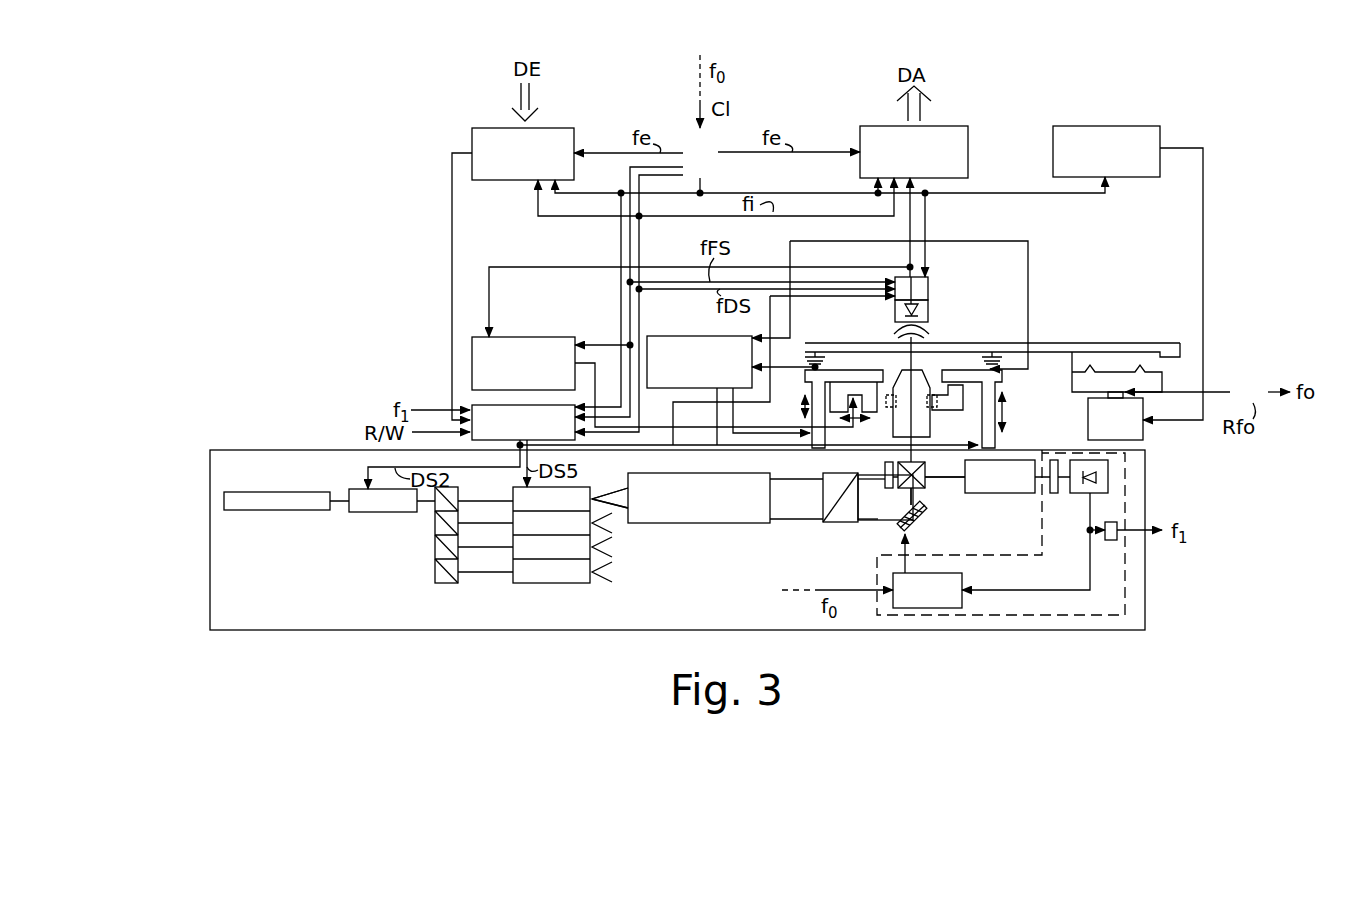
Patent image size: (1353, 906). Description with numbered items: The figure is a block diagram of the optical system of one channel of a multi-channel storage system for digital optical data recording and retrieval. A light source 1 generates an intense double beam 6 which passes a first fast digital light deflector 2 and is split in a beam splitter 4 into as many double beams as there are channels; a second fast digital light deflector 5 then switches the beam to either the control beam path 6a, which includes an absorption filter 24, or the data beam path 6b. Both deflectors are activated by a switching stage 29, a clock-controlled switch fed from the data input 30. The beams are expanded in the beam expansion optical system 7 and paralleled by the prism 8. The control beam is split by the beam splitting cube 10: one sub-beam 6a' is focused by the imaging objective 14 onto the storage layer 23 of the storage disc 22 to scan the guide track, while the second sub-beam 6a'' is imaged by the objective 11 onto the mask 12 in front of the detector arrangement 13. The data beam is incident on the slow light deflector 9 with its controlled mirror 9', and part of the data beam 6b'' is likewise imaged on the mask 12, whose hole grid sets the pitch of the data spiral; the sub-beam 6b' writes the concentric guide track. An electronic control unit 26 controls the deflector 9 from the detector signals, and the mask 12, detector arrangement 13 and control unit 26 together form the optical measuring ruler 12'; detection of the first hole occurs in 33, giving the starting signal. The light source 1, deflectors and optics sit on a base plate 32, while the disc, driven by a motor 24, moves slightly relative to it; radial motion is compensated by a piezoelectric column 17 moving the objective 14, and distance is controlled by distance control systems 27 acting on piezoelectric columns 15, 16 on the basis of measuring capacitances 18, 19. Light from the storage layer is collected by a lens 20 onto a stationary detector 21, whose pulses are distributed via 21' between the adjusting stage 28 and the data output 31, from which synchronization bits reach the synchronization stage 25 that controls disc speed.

The light source 1 is at (283, 511).
The first fast digital light deflector 2 is at (367, 513).
The beam splitter 4 is at (445, 584).
The second fast digital light deflector 5 is at (538, 584).
The double beam 6 is at (478, 501).
The control beam path 6a is at (738, 474).
The data beam path 6b is at (735, 538).
The sub-beam of the control beam 6a' is at (878, 468).
The second sub-beam of the control beam 6a'' is at (972, 507).
The data beam sub-beam 6b' is at (935, 504).
The data beam sub-beam 6b'' is at (945, 461).
The beam expansion optical system 7 is at (693, 518).
The prism 8 is at (848, 516).
The slow light deflector 9 is at (917, 524).
The mirror 9' is at (898, 526).
The beam splitting cube 10 is at (927, 481).
The objective 11 is at (1010, 494).
The mask 12 is at (1063, 492).
The optical measuring ruler 12' is at (1037, 532).
The detector arrangement 13 is at (1098, 494).
The imaging objective 14 is at (930, 427).
The piezoelectric column 15 is at (996, 438).
The piezoelectric column 16 is at (812, 437).
The piezoelectric column 17 is at (857, 405).
The measuring capacitance 18 is at (812, 362).
The measuring capacitance 19 is at (992, 372).
The lens 20 is at (930, 330).
The detector 21 is at (928, 300).
The pulse distributor 21' is at (931, 288).
The storage disc 22 is at (1047, 347).
The storage layer 23 is at (1060, 352).
The absorption filter / motor 24 is at (1102, 423).
The synchronization stage 25 is at (1087, 137).
The electronic control unit 26 is at (948, 582).
The distance control system 27 is at (680, 356).
The adjusting stage 28 is at (540, 349).
The switching stage 29 is at (487, 412).
The data input 30 is at (546, 137).
The data output 31 is at (937, 137).
The base plate 32 is at (345, 631).
The first hole detector 33 is at (1110, 541).